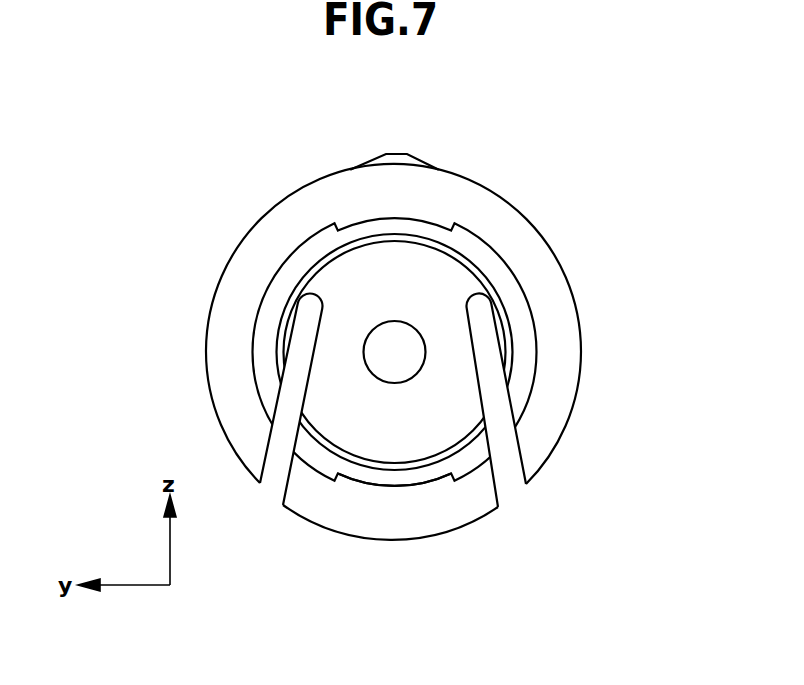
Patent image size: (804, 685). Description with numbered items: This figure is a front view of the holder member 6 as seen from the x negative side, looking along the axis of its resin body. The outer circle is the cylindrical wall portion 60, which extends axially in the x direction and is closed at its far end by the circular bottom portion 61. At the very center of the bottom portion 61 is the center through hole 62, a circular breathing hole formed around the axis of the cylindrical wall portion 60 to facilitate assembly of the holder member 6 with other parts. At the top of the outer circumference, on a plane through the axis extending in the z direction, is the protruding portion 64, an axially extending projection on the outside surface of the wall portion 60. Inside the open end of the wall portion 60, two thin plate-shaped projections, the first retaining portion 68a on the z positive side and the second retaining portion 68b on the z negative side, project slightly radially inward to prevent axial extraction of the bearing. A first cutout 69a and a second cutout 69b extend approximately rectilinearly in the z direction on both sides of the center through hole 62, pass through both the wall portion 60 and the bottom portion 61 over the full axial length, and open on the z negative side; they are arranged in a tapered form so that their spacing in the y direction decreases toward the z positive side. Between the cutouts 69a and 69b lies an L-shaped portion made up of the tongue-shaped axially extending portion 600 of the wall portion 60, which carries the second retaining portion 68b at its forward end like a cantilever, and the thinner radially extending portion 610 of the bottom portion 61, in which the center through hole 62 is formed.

The holder member 6 is at (597, 273).
The cylindrical wall portion 60 is at (560, 327).
The axially extending portion 600 is at (315, 498).
The bottom portion 61 is at (443, 277).
The radially extending portion 610 is at (390, 428).
The center through hole 62 is at (376, 363).
The protruding portion 64 is at (398, 153).
The first retaining portion 68a is at (385, 212).
The second retaining portion 68b is at (385, 490).
The first cutout 69a is at (523, 462).
The second cutout 69b is at (262, 458).